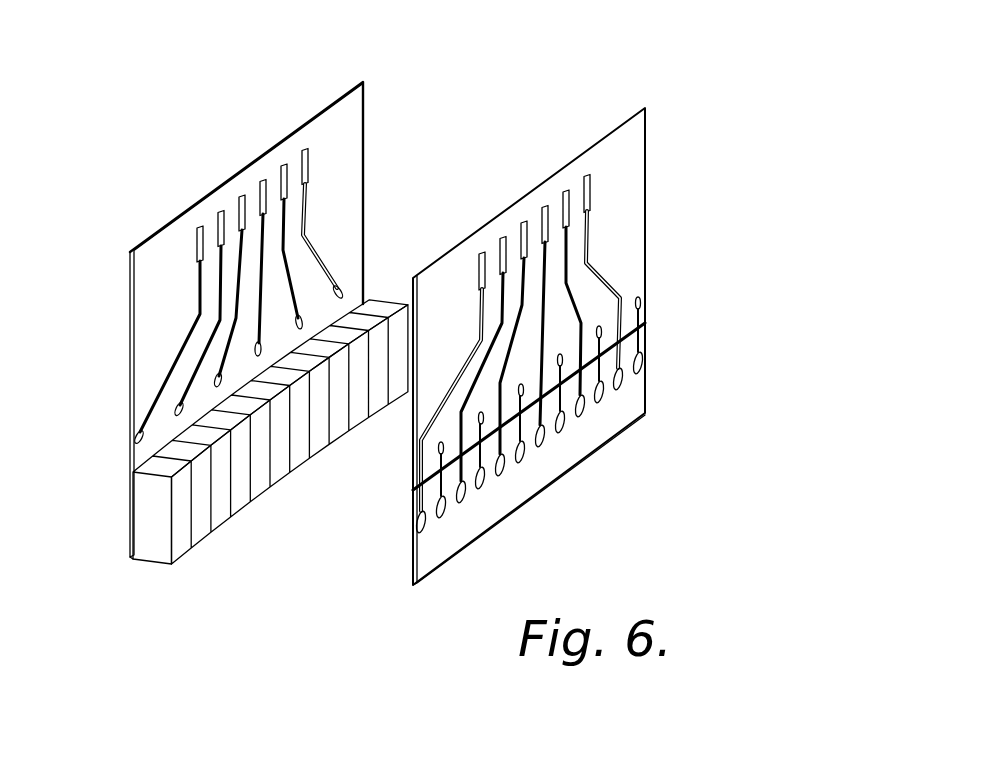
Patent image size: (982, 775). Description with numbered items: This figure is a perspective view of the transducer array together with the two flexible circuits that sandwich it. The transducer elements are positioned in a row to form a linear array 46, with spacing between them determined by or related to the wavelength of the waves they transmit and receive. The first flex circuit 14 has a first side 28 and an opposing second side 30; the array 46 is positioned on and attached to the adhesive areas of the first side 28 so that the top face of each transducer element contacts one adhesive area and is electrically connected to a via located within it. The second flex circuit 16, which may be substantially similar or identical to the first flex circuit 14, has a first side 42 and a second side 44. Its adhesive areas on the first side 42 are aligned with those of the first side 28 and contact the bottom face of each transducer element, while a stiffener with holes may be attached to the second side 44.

The first flex circuit 14 is at (182, 165).
The second flex circuit 16 is at (678, 105).
The first side 28 is at (340, 132).
The second side 30 is at (305, 110).
The first side 42 is at (412, 30).
The second side 44 is at (630, 185).
The linear array 46 is at (123, 568).